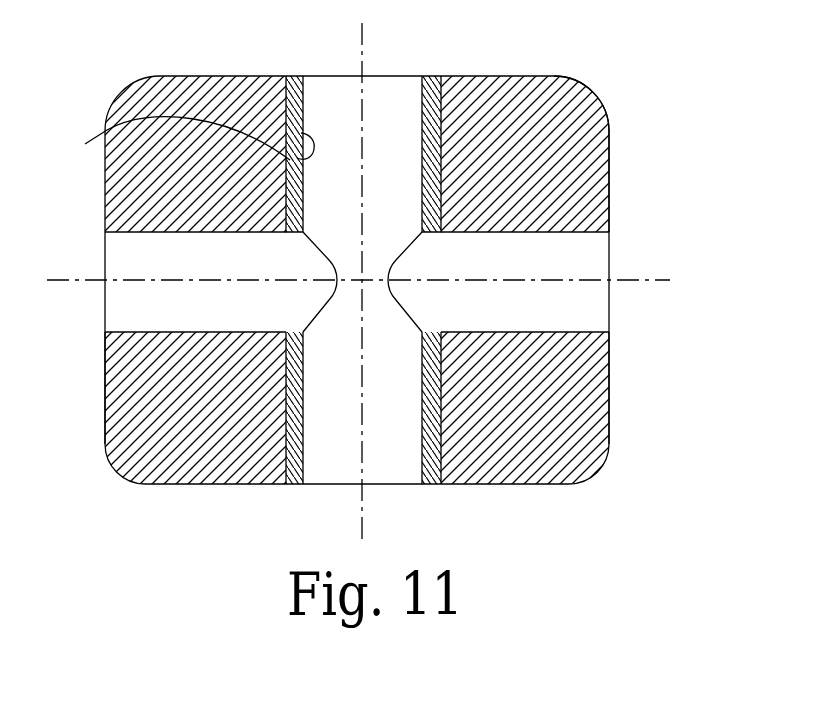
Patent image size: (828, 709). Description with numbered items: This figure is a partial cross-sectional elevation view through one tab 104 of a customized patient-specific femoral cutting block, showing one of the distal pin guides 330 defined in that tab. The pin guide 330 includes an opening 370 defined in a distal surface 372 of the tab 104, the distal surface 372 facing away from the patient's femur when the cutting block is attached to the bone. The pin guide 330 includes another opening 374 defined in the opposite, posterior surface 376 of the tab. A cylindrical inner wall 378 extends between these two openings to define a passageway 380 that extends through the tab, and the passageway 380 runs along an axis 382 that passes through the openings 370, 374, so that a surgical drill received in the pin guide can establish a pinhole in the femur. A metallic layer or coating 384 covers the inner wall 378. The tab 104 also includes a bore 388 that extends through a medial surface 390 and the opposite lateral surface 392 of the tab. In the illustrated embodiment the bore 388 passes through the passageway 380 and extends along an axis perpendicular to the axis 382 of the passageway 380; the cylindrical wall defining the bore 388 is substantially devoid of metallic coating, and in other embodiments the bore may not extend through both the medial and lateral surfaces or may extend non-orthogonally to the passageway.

The tab 104 is at (590, 98).
The distal pin guide 330 is at (411, 60).
The opening 370 is at (447, 486).
The distal surface 372 is at (531, 486).
The opening 374 is at (450, 77).
The posterior surface 376 is at (200, 76).
The cylindrical inner wall 378 is at (297, 76).
The passageway 380 is at (322, 482).
The axis 382 is at (365, 527).
The metallic layer or coating 384 is at (178, 139).
The bore 388 is at (612, 306).
The medial surface 390 is at (611, 438).
The lateral surface 392 is at (642, 278).